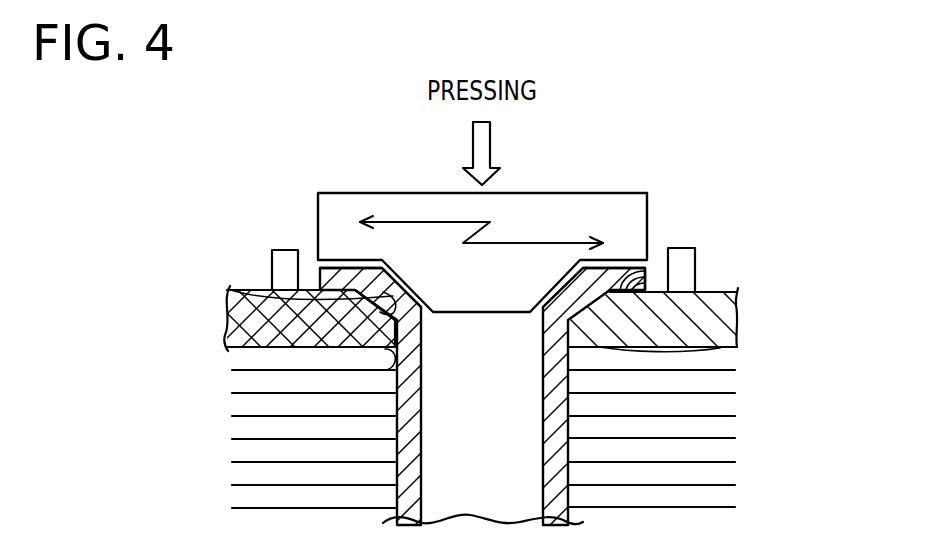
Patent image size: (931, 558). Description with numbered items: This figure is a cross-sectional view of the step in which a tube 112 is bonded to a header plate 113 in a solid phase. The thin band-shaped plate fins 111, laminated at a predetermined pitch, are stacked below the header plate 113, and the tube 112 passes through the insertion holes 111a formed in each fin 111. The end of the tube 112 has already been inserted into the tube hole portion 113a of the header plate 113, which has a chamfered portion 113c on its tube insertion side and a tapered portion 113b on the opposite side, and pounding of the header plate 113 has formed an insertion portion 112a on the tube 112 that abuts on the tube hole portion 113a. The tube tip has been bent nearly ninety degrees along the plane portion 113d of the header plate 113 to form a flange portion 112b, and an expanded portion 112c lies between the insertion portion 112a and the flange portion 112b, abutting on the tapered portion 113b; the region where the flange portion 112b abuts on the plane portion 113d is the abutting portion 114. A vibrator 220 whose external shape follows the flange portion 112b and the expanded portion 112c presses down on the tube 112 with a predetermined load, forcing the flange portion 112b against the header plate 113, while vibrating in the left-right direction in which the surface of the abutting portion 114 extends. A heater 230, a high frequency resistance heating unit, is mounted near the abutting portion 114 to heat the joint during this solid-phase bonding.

The vibrator 220 is at (625, 207).
The heater 230 is at (284, 258).
The tube 112 is at (555, 473).
The flange portion 112b is at (630, 255).
The expanded portion 112c is at (580, 325).
The insertion portion 112a is at (660, 350).
The abutting portion 114 is at (628, 284).
The header plate 113 is at (245, 307).
The plane portion 113d is at (261, 284).
The tapered portion 113b is at (393, 295).
The tube hole portion 113a is at (385, 350).
The chamfered portion 113c is at (394, 358).
The plate fin 111 is at (685, 413).
The insertion hole 111a is at (570, 438).